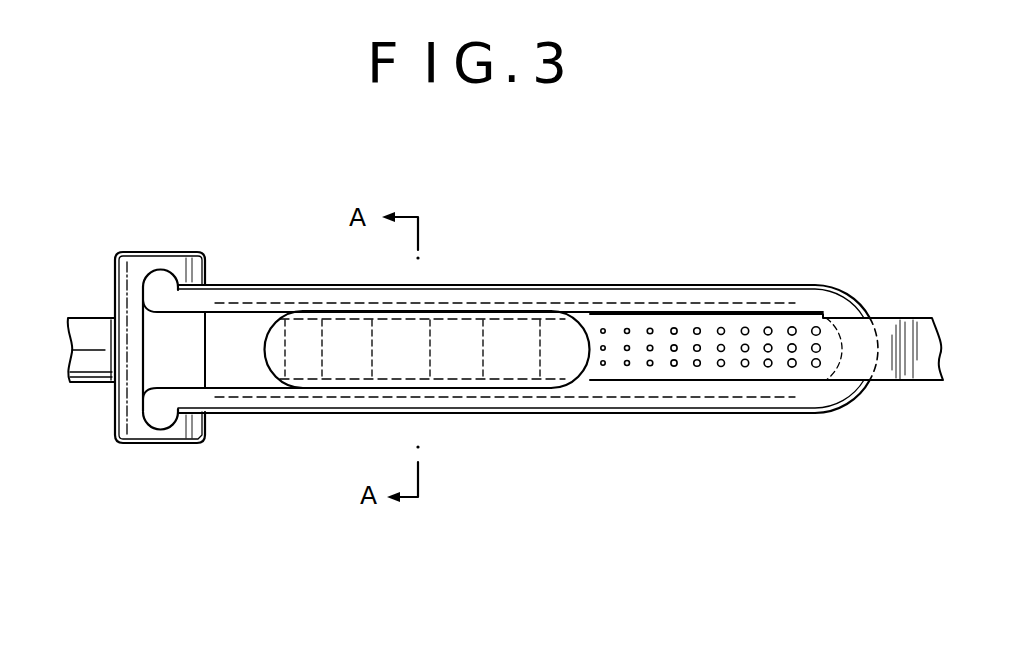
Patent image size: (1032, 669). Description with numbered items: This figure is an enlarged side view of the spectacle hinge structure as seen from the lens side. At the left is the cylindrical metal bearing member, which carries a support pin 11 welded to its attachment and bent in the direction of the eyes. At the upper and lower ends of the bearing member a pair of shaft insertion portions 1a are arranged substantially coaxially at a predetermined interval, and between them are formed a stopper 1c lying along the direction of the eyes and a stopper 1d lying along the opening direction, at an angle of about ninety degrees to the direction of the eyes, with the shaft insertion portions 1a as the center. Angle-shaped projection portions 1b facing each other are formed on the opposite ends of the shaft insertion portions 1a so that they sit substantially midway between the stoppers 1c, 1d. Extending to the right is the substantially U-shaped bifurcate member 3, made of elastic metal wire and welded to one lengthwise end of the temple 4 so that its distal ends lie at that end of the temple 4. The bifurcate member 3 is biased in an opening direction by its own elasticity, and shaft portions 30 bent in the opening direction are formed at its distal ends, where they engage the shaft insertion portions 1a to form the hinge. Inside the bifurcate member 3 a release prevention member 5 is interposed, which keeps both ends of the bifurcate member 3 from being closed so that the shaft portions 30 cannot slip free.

The shaft insertion portion 1a is at (157, 250).
The projection portion 1b is at (222, 289).
The stopper 1c is at (160, 343).
The stopper 1d is at (205, 350).
The bifurcate member 3 is at (622, 285).
The temple 4 is at (904, 318).
The release prevention member 5 is at (497, 372).
The support pin 11 is at (92, 316).
The shaft portion 30 is at (163, 282).